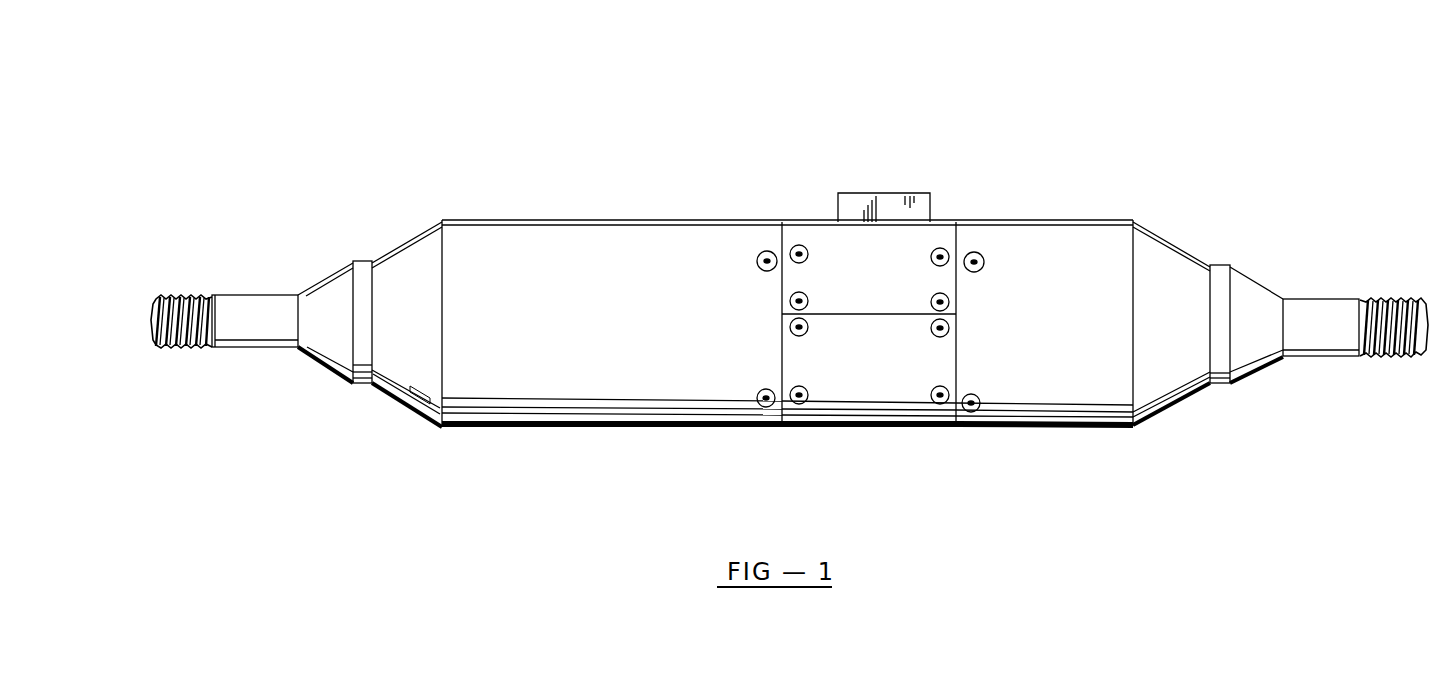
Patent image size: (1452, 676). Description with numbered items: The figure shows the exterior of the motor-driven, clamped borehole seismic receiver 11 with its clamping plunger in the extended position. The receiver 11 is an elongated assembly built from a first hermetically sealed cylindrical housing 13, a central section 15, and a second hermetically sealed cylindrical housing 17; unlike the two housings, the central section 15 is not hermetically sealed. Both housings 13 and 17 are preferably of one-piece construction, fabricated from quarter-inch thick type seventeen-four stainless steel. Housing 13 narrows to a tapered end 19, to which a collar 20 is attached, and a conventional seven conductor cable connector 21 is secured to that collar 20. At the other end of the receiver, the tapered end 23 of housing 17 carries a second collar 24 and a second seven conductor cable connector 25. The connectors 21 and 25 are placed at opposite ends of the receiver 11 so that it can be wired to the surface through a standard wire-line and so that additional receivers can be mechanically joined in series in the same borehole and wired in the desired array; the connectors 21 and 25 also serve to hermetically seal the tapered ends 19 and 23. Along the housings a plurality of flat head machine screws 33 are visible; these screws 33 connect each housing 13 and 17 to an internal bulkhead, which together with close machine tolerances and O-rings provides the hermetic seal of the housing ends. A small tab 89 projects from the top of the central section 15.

The borehole receiver 11 is at (643, 168).
The first hermetically sealed cylindrical housing 13 is at (1070, 222).
The central section 15 is at (808, 218).
The second hermetically sealed cylindrical housing 17 is at (527, 220).
The tapered end 19 is at (1183, 250).
The collar 20 is at (1260, 283).
The seven conductor cable connector 21 is at (1340, 298).
The tapered end 23 is at (408, 240).
The second collar 24 is at (323, 280).
The second seven conductor cable connector 25 is at (237, 292).
The flat head machine screws 33 is at (760, 253).
The indicator tab 89 is at (878, 217).